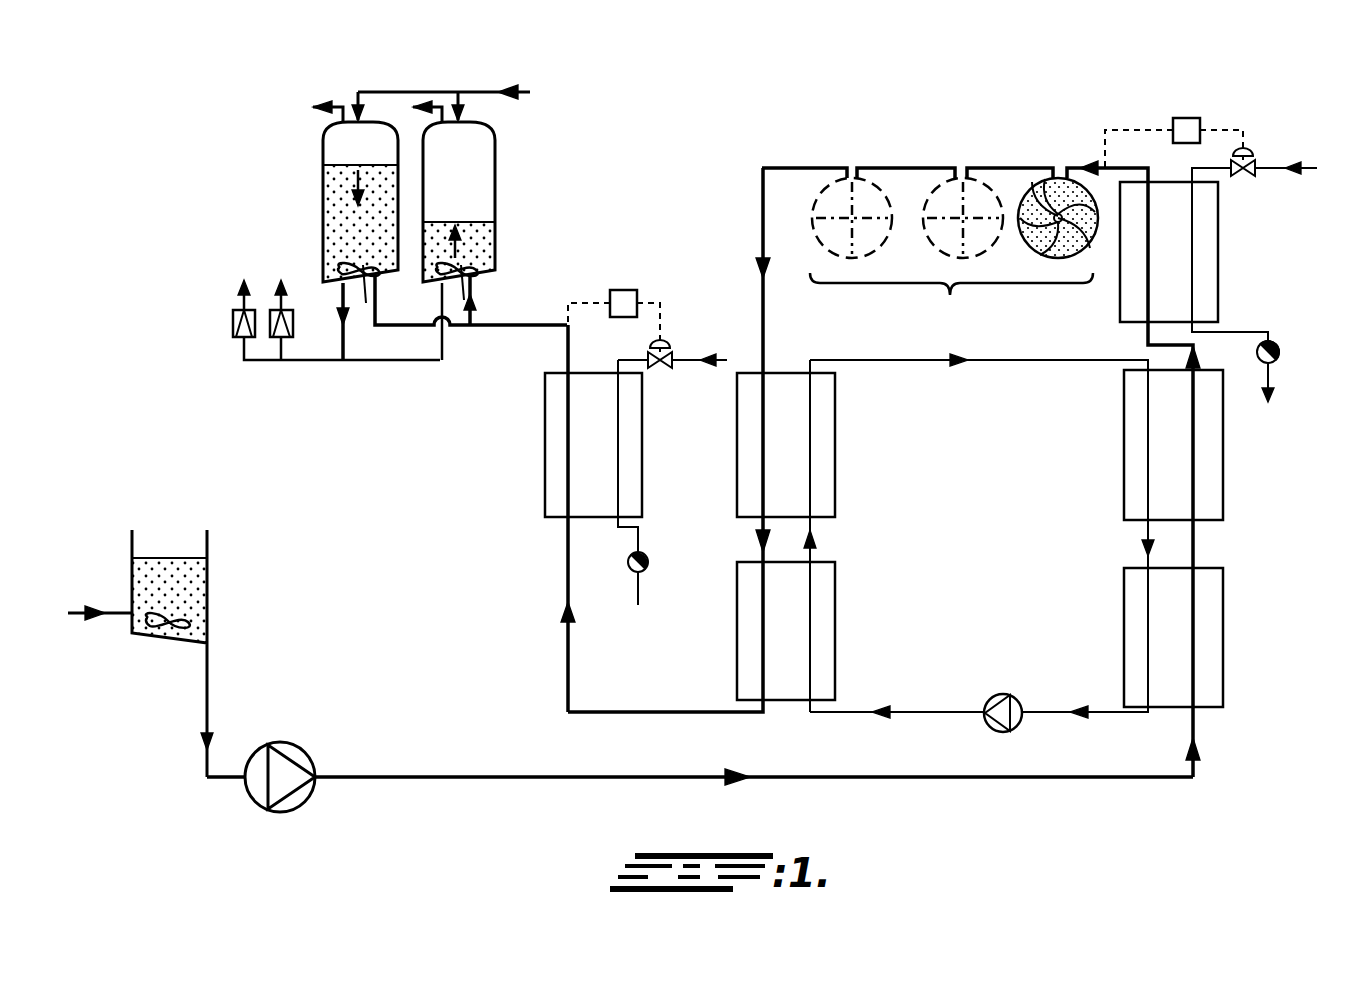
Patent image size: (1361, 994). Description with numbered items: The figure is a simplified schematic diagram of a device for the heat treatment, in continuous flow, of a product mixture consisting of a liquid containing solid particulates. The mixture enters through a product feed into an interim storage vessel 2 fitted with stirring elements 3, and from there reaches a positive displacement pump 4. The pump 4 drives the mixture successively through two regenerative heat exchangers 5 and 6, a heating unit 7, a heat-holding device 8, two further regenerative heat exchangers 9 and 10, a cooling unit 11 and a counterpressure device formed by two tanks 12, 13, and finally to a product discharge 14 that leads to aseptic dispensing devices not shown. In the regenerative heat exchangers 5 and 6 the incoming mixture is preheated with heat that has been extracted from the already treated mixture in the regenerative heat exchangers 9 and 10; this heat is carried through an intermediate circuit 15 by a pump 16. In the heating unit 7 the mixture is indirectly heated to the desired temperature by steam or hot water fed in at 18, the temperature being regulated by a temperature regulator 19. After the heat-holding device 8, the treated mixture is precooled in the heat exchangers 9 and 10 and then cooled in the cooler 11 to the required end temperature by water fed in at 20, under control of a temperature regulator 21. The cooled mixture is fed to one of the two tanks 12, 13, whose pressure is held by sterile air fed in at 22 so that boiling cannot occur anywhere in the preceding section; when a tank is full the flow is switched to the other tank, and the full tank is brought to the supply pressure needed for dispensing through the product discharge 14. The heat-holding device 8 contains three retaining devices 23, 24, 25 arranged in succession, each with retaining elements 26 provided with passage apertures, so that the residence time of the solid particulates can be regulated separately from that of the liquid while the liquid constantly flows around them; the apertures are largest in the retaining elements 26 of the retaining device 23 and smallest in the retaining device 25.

The interim storage vessel 2 is at (140, 633).
The stirring elements 3 is at (163, 633).
The pump 4 is at (300, 795).
The regenerative heat exchanger 5 is at (1210, 646).
The regenerative heat exchanger 6 is at (1215, 470).
The heating unit 7 is at (1218, 263).
The heat-holding device 8 is at (927, 249).
The regenerative heat exchanger 9 is at (737, 455).
The regenerative heat exchanger 10 is at (737, 635).
The cooling unit 11 is at (545, 478).
The tank 12 is at (495, 190).
The tank 13 is at (323, 195).
The product discharge 14 is at (233, 322).
The intermediate circuit 15 is at (1010, 362).
The pump 16 is at (1018, 700).
The steam or hot water feed 18 is at (1300, 170).
The temperature regulator 19 is at (1200, 125).
The water feed 20 is at (687, 358).
The temperature regulator 21 is at (625, 290).
The sterile air feed 22 is at (517, 92).
The retaining device 23 is at (1045, 180).
The retaining device 24 is at (993, 192).
The retaining device 25 is at (877, 188).
The retaining elements 26 is at (1090, 238).